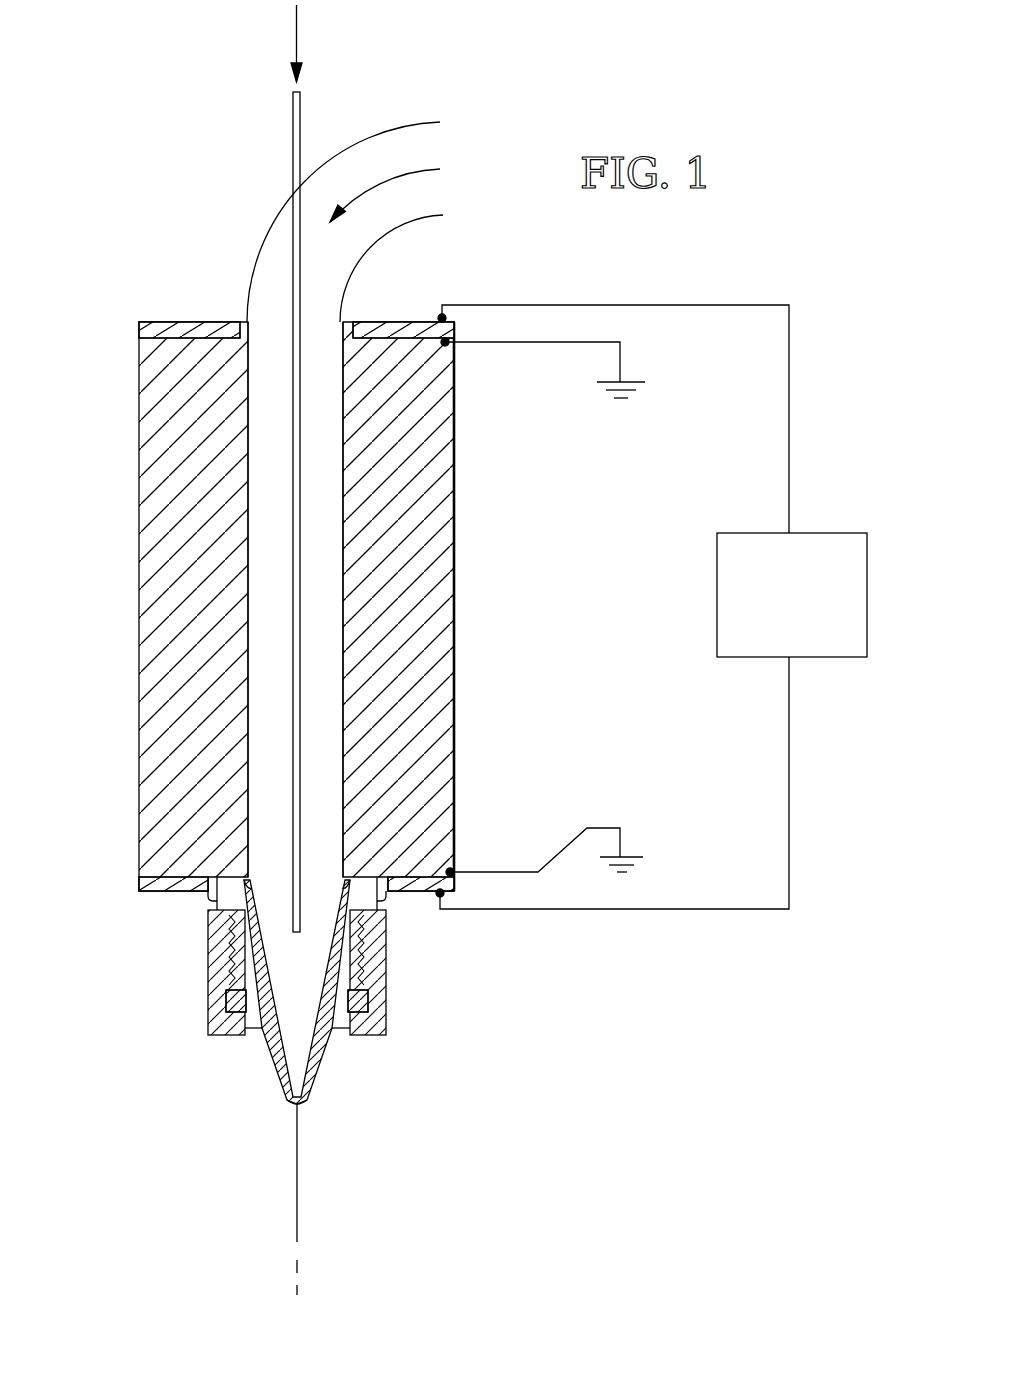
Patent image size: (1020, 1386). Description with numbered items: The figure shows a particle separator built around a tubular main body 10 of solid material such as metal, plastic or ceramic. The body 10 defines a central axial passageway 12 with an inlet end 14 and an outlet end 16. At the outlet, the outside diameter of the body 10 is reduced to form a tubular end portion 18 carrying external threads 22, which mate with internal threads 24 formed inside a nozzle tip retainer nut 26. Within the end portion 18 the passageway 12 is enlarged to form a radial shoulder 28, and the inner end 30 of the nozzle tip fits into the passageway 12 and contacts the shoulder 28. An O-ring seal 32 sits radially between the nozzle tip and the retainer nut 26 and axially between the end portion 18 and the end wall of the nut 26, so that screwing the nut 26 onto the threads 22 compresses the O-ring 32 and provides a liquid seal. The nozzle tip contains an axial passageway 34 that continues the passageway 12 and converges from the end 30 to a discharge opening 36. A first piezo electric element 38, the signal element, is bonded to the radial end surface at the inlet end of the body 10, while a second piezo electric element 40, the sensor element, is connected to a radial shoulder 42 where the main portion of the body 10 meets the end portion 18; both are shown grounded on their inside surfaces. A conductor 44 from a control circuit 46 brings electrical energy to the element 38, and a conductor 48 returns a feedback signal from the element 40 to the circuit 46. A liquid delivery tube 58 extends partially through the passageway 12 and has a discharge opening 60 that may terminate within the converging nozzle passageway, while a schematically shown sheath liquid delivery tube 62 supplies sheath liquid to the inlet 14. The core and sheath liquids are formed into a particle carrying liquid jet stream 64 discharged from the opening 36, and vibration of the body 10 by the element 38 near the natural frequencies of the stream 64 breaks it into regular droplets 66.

The tubular main body 10 is at (520, 618).
The central axial passageway 12 is at (330, 460).
The inlet end 14 is at (265, 285).
The outlet end 16 is at (238, 978).
The tubular end portion 18 is at (386, 977).
The external threads 22 is at (385, 922).
The internal threads 24 is at (212, 922).
The nozzle tip retainer nut 26 is at (230, 925).
The radial shoulder 28 is at (345, 883).
The end of nozzle tip 30 is at (257, 888).
The O-ring seal 32 is at (226, 1015).
The axial passageway 34 is at (303, 1102).
The discharge opening 36 is at (284, 1042).
The first piezo electric element 38 is at (170, 322).
The second piezo electric element 40 is at (139, 882).
The radial shoulder 42 is at (208, 892).
The conductor 44 is at (548, 305).
The control circuit 46 is at (808, 612).
The conductor 48 is at (656, 910).
The liquid delivery tube 58 is at (291, 116).
The discharge opening 60 is at (300, 934).
The sheath liquid delivery tube 62 is at (410, 122).
The liquid jet stream 64 is at (296, 1153).
The droplets 66 is at (299, 1270).